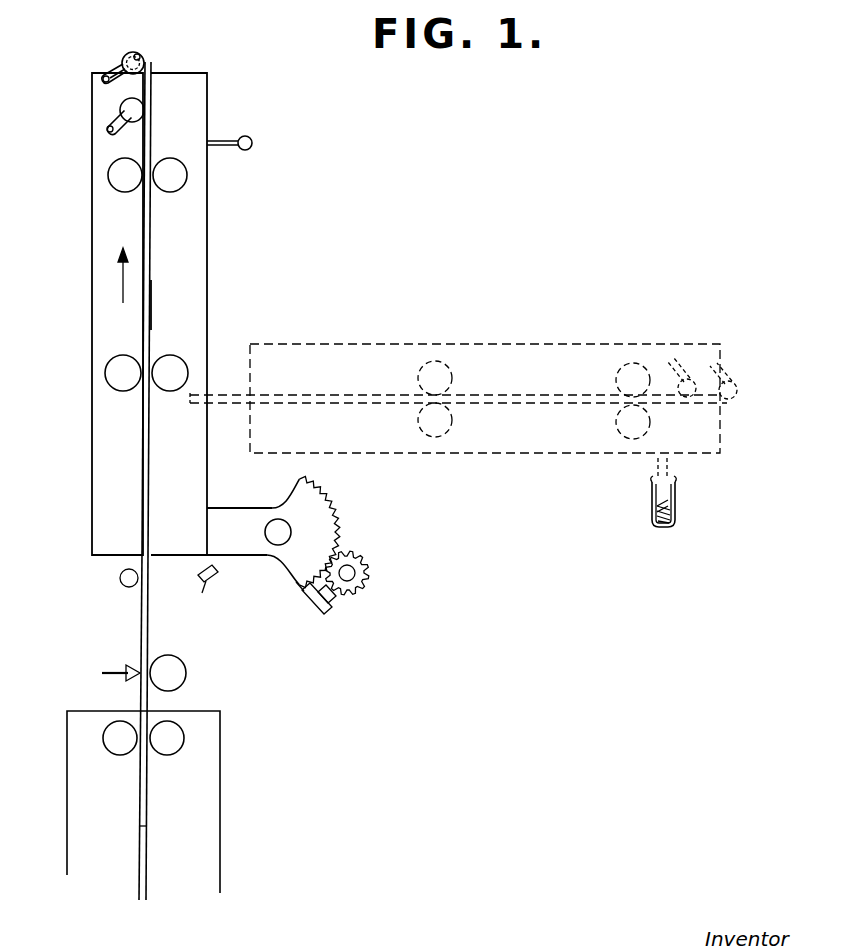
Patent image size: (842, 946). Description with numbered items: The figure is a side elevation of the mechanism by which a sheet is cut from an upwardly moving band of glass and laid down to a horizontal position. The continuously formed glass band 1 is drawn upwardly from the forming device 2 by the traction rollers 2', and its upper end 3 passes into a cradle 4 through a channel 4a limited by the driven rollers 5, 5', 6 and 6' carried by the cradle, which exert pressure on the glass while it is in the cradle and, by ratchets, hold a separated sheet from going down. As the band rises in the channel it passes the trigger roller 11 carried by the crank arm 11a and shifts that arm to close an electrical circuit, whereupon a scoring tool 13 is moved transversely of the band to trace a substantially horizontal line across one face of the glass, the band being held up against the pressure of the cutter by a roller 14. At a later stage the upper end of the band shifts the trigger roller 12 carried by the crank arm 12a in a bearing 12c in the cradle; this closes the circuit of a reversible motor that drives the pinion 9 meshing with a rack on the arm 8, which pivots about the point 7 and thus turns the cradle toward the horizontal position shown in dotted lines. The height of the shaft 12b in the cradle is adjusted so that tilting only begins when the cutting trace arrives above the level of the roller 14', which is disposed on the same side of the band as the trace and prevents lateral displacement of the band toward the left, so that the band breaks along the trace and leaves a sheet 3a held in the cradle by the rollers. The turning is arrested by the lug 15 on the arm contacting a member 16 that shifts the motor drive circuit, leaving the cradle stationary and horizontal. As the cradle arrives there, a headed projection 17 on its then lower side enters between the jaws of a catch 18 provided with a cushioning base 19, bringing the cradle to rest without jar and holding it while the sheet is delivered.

The continuously formed glass band 1 is at (140, 826).
The forming device 2 is at (163, 802).
The traction rollers 2' is at (145, 739).
The upper end of the glass band 3 is at (141, 702).
The sheet of glass 3a is at (505, 418).
The cradle 4 is at (207, 262).
The channel 4a is at (152, 307).
The driven roller 5 is at (302, 420).
The driven roller 5' is at (257, 356).
The driven roller 6 is at (401, 328).
The driven roller 6' is at (354, 277).
The pivot 7 is at (272, 548).
The arm 8 is at (333, 500).
The pinion 9 is at (355, 553).
The trigger roller 11 is at (120, 112).
The crank arm 11a is at (666, 357).
The trigger roller 12 is at (131, 53).
The crank arm 12a is at (742, 352).
The shaft 12b is at (106, 80).
The bearing 12c is at (146, 58).
The scoring tool 13 is at (128, 668).
The roller 14 is at (194, 673).
The roller 14' is at (103, 581).
The lug 15 is at (302, 610).
The stop member 16 is at (209, 591).
The headed projection 17 is at (250, 138).
The catch 18 is at (676, 500).
The cushioning base 19 is at (657, 505).